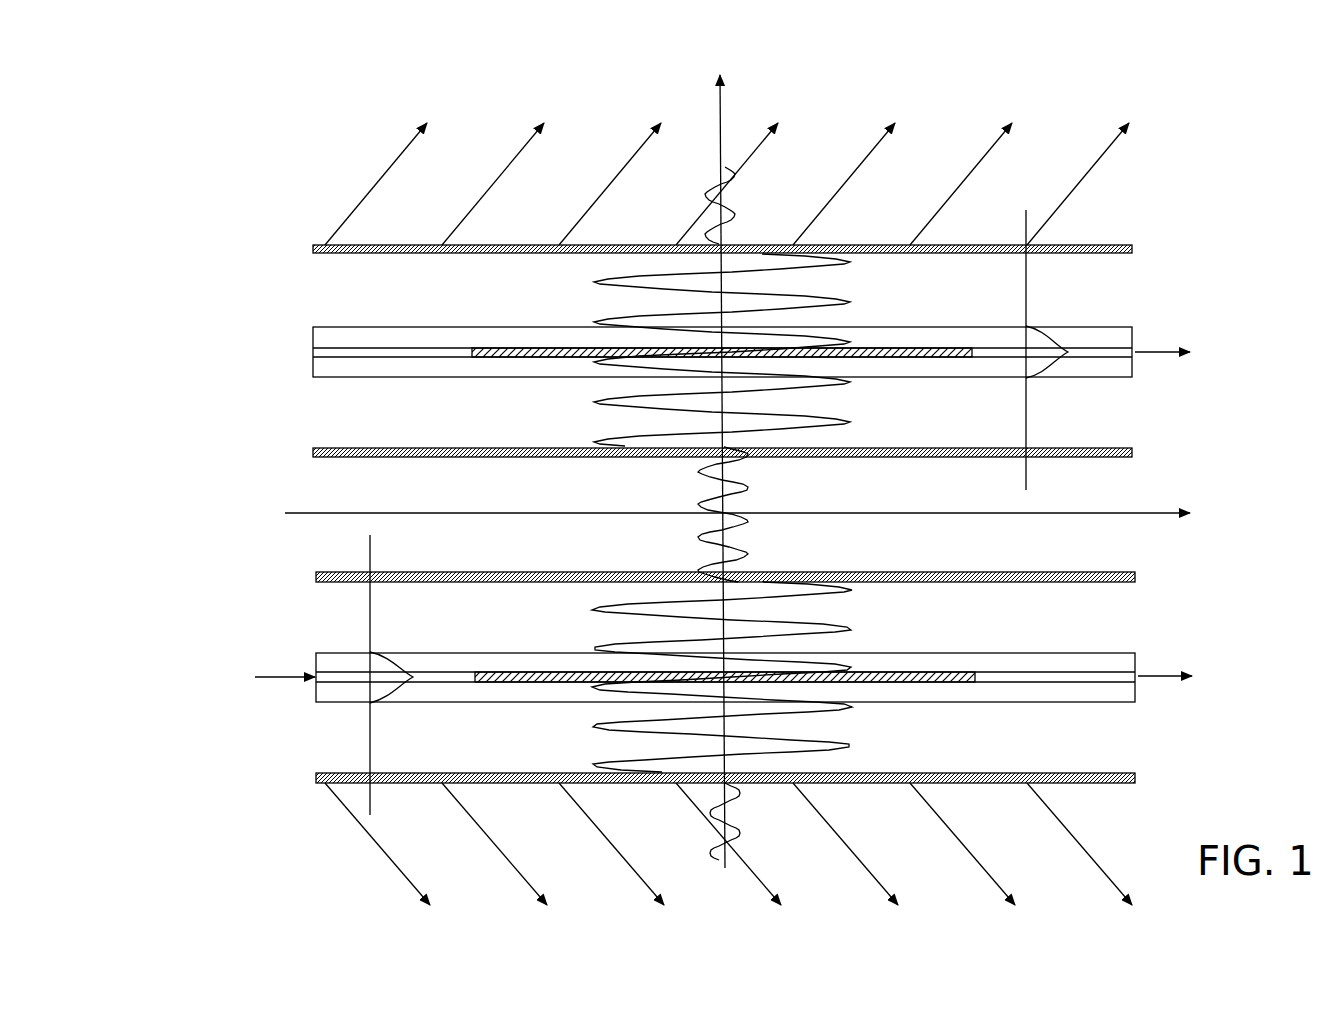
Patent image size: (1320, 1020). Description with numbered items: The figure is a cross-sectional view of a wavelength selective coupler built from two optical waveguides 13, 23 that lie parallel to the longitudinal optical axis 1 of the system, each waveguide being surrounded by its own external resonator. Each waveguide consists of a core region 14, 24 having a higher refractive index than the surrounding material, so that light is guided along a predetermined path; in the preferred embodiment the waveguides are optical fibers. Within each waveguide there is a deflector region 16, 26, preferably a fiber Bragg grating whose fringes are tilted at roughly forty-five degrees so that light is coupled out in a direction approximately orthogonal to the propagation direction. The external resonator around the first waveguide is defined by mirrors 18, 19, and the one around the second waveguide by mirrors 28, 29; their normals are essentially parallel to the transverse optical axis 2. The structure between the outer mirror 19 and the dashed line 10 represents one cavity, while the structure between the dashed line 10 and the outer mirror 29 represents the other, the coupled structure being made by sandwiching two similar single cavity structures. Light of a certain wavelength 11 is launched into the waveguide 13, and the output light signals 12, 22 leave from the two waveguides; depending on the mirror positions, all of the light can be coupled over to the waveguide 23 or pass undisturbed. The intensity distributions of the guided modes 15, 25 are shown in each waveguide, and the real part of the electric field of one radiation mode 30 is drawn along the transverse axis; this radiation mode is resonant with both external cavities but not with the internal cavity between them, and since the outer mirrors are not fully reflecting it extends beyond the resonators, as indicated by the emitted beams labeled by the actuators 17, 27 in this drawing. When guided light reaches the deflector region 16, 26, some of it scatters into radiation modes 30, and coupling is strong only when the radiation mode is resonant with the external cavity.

The longitudinal optical axis 1 is at (1163, 508).
The transverse optical axis 2 is at (724, 90).
The dashed line 10 is at (293, 533).
The light of a certain wavelength 11 is at (254, 677).
The output light signal 12 is at (1195, 675).
The optical waveguide 13 is at (345, 650).
The core region 14 is at (346, 685).
The intensity distribution of the guided mode 15 is at (401, 688).
The deflector region 16 is at (518, 674).
The actuator 17 is at (373, 842).
The mirror 18 is at (1097, 584).
The outer mirror 19 is at (1096, 771).
The output light signal 22 is at (1193, 350).
The optical waveguide 23 is at (334, 327).
The core region 24 is at (370, 358).
The intensity distribution of the guided mode 25 is at (1045, 363).
The deflector region 26 is at (535, 347).
The actuator 27 is at (362, 197).
The mirror 28 is at (352, 446).
The outer mirror 29 is at (349, 257).
The radiation mode 30 is at (749, 523).